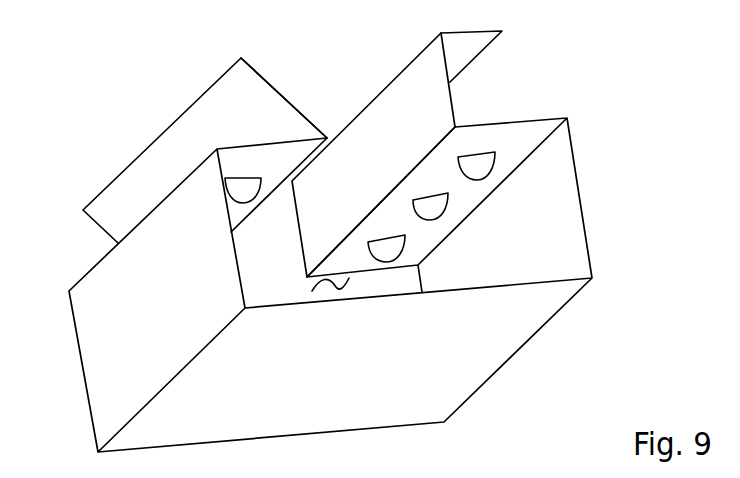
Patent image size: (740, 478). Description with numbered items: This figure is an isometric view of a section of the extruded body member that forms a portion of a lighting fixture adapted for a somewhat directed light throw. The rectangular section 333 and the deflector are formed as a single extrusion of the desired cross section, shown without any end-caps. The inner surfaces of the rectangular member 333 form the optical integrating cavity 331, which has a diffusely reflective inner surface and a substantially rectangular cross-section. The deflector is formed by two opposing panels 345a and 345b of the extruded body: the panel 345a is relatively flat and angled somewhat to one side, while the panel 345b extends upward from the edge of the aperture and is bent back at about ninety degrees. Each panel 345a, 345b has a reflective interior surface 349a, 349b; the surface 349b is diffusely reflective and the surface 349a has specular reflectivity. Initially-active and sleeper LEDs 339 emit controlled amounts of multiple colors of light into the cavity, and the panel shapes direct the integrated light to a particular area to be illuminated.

The rectangular member 333 is at (586, 218).
The deflector panel 345a is at (137, 157).
The deflector panel 345b is at (459, 51).
The reflective interior surface 349a is at (277, 85).
The reflective interior surface 349b is at (410, 97).
The LEDs 339 is at (483, 157).
The optical integrating cavity 331 is at (325, 280).